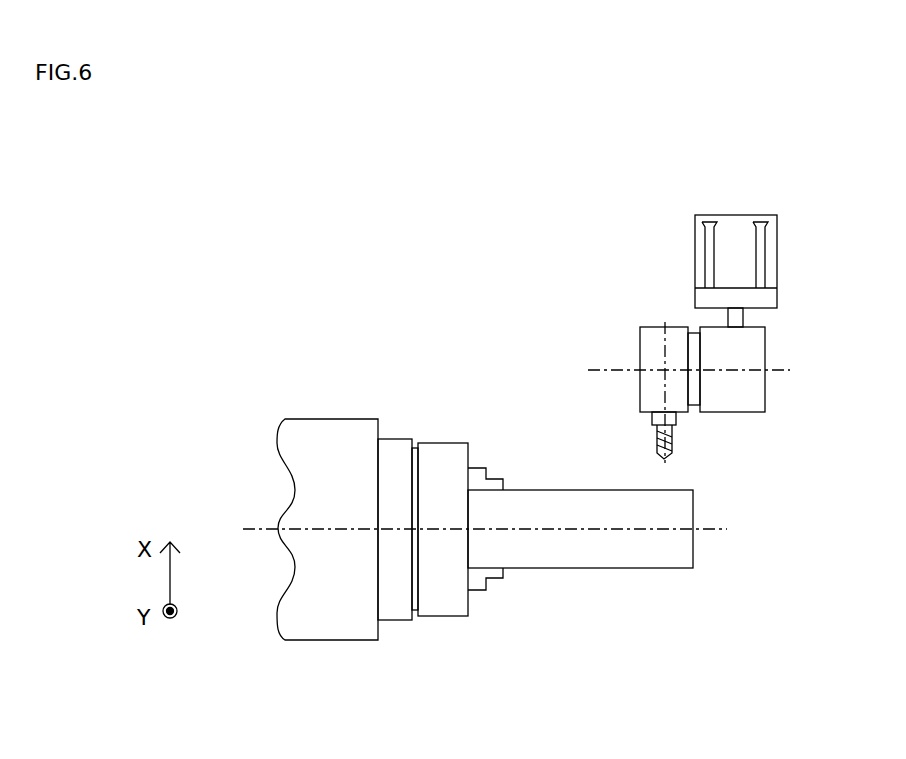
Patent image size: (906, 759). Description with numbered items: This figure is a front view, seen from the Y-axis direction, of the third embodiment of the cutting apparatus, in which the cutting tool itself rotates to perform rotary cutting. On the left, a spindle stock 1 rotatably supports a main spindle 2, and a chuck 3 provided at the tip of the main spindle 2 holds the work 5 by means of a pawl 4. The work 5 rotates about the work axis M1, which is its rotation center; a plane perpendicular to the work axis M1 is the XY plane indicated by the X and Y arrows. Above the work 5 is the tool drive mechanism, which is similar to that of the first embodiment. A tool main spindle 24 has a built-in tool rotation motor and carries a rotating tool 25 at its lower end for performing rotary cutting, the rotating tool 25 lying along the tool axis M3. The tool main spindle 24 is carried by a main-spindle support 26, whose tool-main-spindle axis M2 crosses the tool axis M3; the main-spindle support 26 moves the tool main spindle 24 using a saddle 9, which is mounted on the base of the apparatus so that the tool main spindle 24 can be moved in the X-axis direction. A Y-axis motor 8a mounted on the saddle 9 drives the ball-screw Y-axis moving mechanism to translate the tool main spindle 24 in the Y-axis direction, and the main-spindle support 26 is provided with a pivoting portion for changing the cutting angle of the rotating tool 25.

The spindle stock 1 is at (330, 432).
The main spindle 2 is at (392, 452).
The chuck 3 is at (440, 455).
The pawl 4 is at (478, 483).
The work 5 is at (583, 555).
The Y-axis motor 8a is at (732, 315).
The saddle 9 is at (748, 257).
The tool main spindle 24 is at (650, 333).
The rotating tool 25 is at (657, 445).
The main-spindle support 26 is at (738, 403).
The work axis M1 is at (719, 533).
The tool-main-spindle axis M2 is at (782, 372).
The tool axis M3 is at (665, 353).